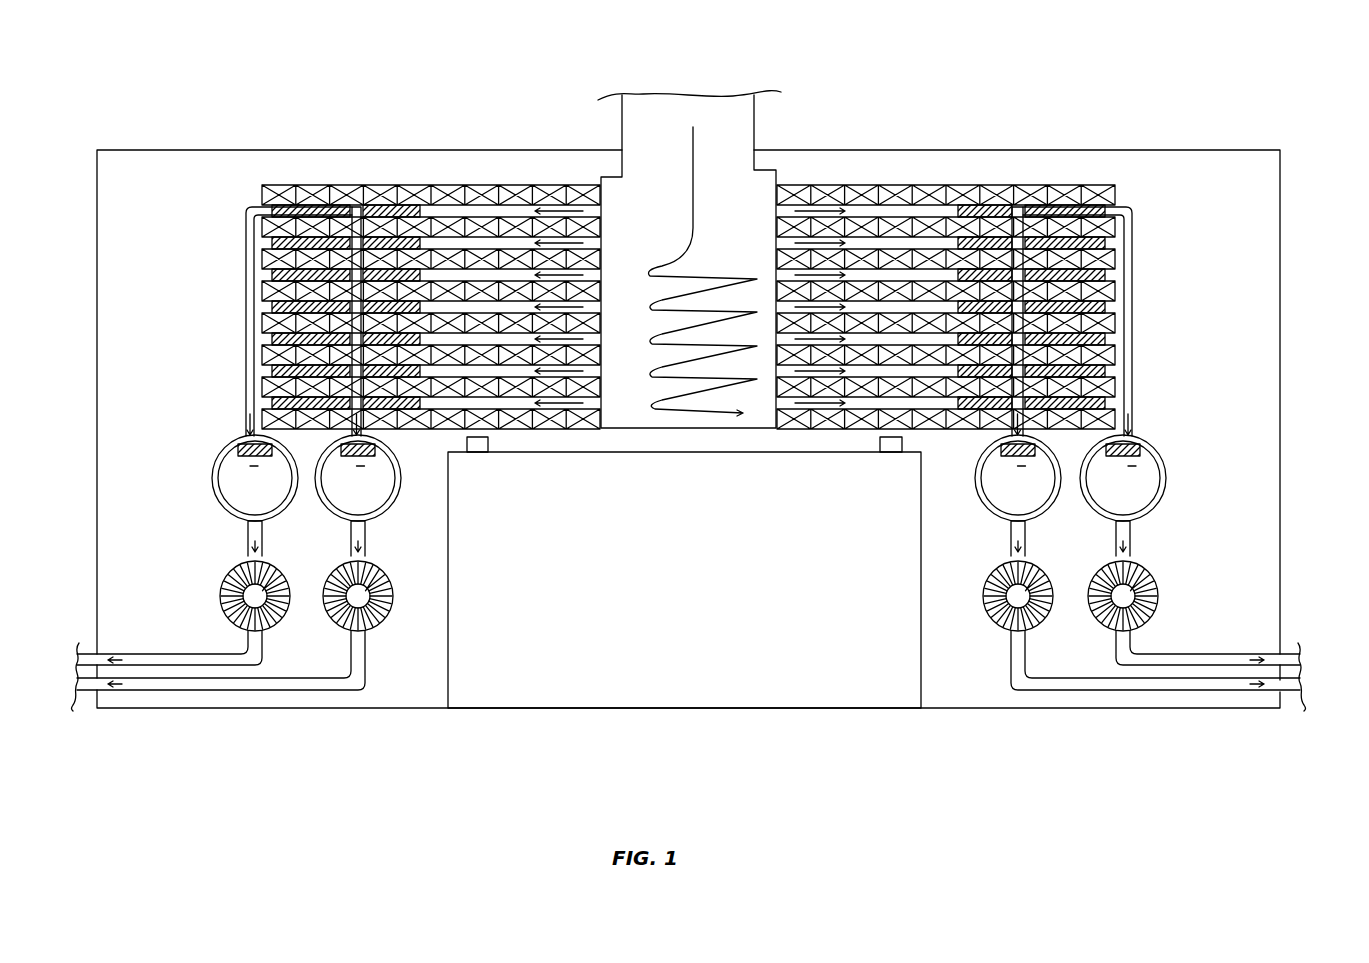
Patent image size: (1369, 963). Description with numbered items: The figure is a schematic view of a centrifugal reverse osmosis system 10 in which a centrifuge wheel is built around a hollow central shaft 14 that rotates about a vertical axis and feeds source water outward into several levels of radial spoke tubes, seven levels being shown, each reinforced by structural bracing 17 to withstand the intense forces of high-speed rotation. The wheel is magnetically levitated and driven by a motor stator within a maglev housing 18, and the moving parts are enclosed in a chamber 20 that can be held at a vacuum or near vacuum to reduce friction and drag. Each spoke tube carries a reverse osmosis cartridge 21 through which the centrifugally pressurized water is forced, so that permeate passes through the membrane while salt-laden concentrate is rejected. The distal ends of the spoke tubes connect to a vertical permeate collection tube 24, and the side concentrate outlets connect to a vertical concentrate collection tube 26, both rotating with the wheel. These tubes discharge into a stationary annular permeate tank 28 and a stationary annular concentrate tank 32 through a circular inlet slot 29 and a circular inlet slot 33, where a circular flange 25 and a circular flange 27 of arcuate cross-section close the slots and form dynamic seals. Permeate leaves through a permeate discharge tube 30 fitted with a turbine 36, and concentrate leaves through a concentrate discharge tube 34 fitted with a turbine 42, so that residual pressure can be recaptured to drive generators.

The centrifugal reverse osmosis system 10 is at (1043, 60).
The central shaft 14 is at (757, 129).
The structural bracing 17 is at (1118, 283).
The maglev housing 18 is at (699, 589).
The chamber 20 is at (1280, 352).
The reverse osmosis cartridge 21 is at (1118, 358).
The permeate collection tube 24 is at (246, 244).
The circular flange 25 is at (1106, 460).
The concentrate collection tube 26 is at (382, 198).
The circular flange 27 is at (1016, 461).
The permeate tank 28 is at (1150, 492).
The circular inlet slot 29 is at (1128, 440).
The permeate discharge tube 30 is at (248, 542).
The concentrate tank 32 is at (992, 503).
The circular inlet slot 33 is at (1032, 446).
The concentrate discharge tube 34 is at (366, 542).
The turbine 36 is at (1160, 592).
The turbine 42 is at (992, 602).